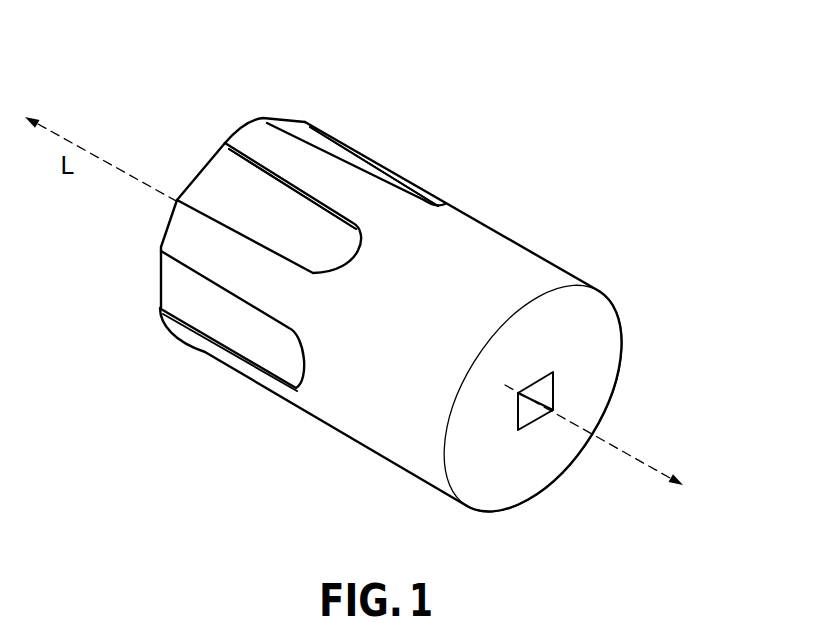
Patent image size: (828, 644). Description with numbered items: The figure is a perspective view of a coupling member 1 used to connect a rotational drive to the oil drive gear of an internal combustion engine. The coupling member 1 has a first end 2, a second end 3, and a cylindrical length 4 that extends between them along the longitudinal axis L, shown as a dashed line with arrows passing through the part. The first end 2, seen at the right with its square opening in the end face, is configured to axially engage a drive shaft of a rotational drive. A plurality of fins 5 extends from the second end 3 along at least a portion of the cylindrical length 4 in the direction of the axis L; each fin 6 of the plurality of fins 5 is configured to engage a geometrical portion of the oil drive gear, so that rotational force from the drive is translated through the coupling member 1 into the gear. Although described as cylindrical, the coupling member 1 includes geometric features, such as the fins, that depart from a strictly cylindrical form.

The coupling member 1 is at (255, 437).
The first end 2 is at (597, 378).
The second end 3 is at (203, 168).
The cylindrical length 4 is at (617, 268).
The plurality of fins 5 is at (235, 260).
The fin 6 is at (253, 133).